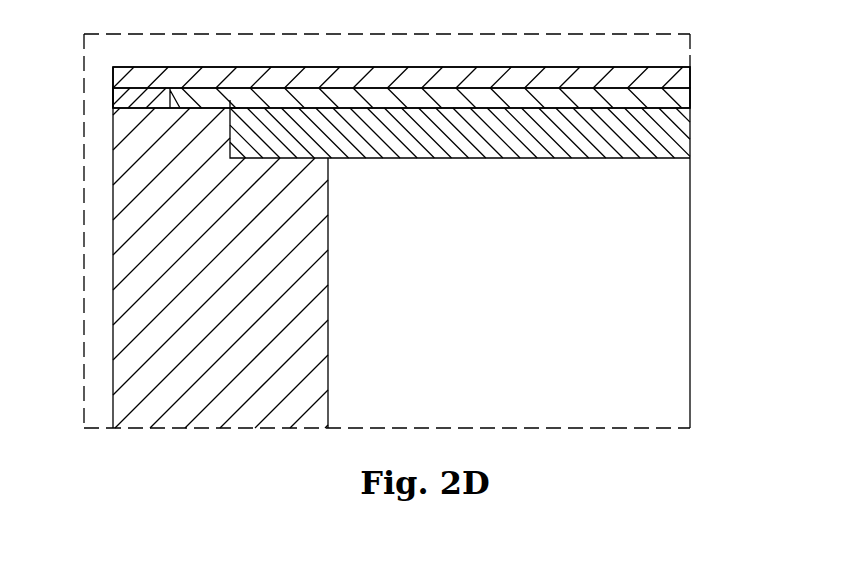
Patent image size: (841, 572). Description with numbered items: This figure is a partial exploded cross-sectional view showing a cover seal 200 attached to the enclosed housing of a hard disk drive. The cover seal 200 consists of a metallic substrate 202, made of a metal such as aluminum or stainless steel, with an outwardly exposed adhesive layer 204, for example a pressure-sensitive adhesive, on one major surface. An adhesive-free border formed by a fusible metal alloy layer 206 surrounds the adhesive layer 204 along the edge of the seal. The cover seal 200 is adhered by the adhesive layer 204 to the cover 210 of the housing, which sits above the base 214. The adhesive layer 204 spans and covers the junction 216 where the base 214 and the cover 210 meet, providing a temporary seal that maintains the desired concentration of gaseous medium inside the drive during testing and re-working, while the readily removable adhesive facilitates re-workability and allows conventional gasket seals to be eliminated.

The cover seal 200 is at (773, 66).
The metallic substrate 202 is at (677, 77).
The adhesive layer 204 is at (673, 98).
The fusible metal alloy layer 206 is at (113, 92).
The cover 210 is at (674, 133).
The base 214 is at (125, 253).
The junction 216 is at (235, 96).